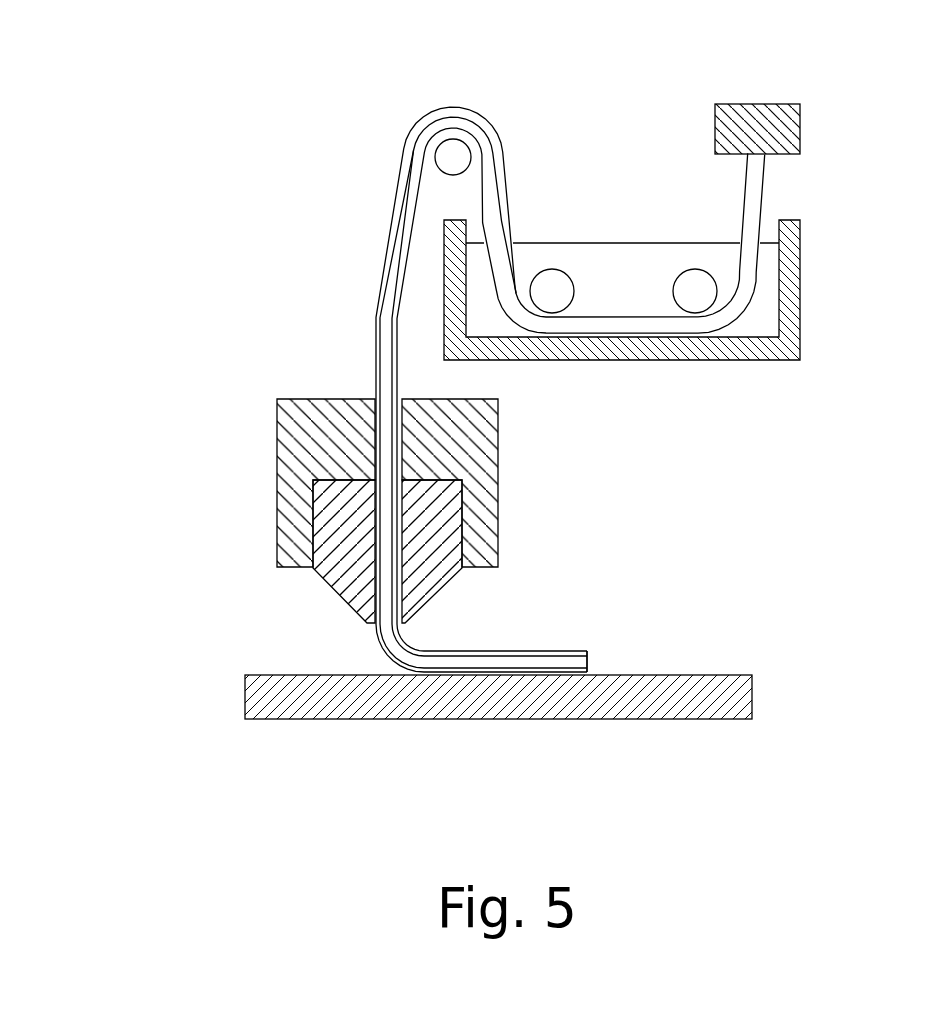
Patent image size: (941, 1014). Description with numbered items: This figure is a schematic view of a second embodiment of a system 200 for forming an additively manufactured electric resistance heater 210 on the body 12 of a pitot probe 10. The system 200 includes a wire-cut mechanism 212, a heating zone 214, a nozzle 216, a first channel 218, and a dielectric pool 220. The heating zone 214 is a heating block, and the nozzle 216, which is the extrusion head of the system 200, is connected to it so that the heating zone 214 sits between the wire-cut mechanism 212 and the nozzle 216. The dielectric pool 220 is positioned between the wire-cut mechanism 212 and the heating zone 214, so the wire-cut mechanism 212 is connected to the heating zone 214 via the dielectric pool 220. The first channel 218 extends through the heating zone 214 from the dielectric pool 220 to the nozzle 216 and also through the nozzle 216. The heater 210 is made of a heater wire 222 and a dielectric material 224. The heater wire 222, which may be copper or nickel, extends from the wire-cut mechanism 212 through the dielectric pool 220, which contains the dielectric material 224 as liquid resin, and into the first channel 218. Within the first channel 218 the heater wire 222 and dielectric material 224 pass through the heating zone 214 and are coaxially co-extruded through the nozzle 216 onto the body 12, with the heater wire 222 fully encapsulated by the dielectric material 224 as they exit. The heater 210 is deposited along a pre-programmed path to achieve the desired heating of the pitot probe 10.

The system 200 is at (220, 110).
The electric resistance heater 210 is at (589, 633).
The wire-cut mechanism 212 is at (788, 125).
The heating zone 214 is at (305, 432).
The nozzle 216 is at (333, 556).
The first channel 218 is at (375, 399).
The dielectric pool 220 is at (665, 348).
The heater wire 222 is at (757, 178).
The dielectric material 224 is at (757, 319).
The pitot probe 10 is at (220, 705).
The body 12 is at (278, 692).